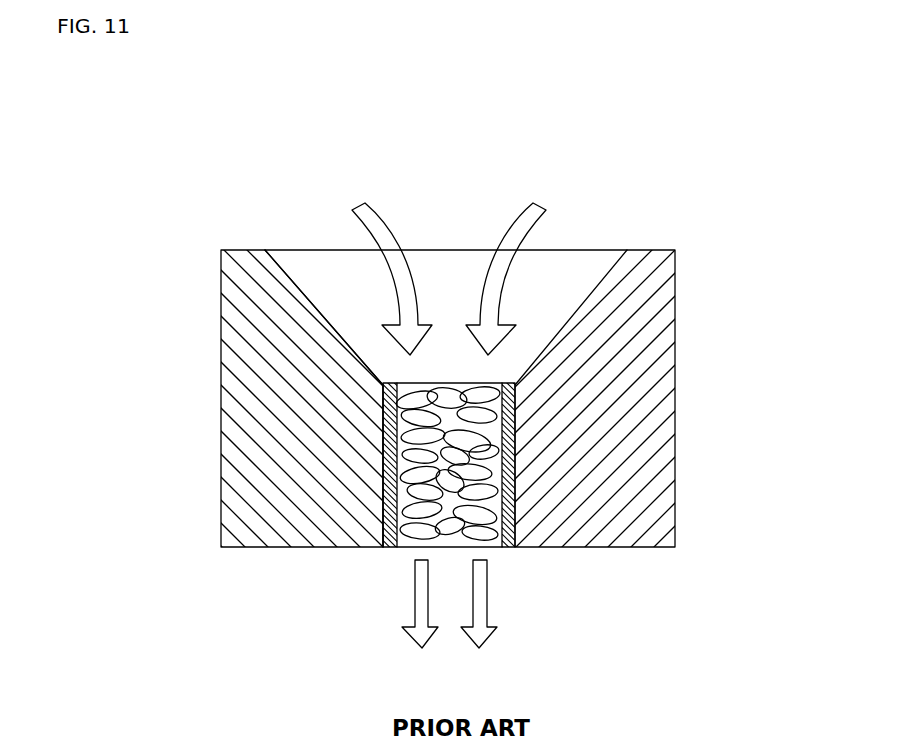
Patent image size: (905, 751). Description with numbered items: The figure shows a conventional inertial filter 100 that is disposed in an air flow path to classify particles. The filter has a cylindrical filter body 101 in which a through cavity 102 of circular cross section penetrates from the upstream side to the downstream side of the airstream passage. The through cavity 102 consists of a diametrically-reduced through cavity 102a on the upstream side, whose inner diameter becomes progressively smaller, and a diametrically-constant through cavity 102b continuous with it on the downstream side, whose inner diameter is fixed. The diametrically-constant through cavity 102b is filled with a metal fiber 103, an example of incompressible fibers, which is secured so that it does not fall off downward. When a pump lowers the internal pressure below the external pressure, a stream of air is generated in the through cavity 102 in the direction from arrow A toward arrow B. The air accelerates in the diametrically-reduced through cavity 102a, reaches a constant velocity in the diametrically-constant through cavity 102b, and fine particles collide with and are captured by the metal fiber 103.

The inertial filter 100 is at (452, 372).
The filter body 101 is at (650, 400).
The through cavity 102 is at (448, 285).
The diametrically-reduced through cavity 102a is at (333, 322).
The diametrically-constant through cavity 102b is at (385, 464).
The metal fiber 103 is at (387, 532).
The arrow A is at (390, 227).
The arrow B is at (412, 637).